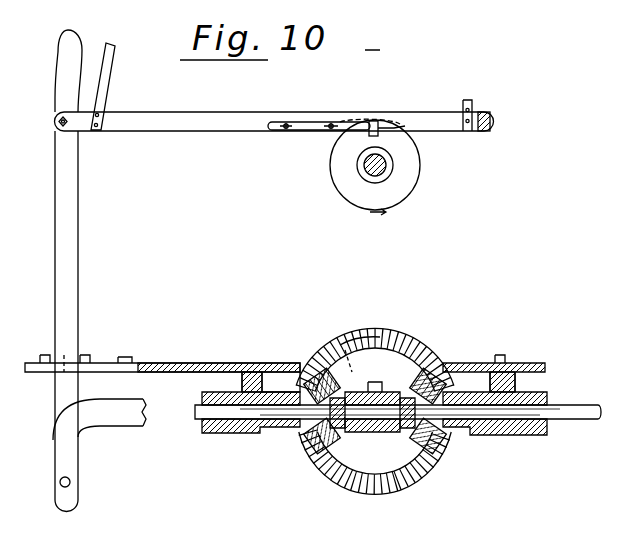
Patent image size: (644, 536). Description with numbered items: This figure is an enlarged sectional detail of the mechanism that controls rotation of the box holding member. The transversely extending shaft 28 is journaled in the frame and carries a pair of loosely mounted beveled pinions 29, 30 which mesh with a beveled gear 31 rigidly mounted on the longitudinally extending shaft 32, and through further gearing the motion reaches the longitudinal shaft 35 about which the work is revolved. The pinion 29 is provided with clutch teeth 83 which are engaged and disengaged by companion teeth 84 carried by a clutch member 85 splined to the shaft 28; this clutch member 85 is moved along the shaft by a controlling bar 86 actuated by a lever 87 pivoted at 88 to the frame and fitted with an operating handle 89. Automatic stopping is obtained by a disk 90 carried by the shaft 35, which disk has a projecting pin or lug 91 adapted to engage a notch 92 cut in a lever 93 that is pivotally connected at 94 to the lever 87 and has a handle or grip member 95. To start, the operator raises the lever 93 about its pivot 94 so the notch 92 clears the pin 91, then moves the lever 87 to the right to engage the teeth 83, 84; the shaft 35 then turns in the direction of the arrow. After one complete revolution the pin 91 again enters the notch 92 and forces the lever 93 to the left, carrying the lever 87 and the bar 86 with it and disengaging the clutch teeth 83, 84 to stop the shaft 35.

The transversely extending shaft 28 is at (580, 404).
The beveled pinion 29 is at (450, 434).
The beveled pinion 30 is at (288, 437).
The beveled gear 31 is at (410, 342).
The longitudinally extending shaft 32 is at (342, 338).
The longitudinal shaft 35 is at (363, 171).
The clutch teeth 83 is at (410, 470).
The companion teeth 84 is at (375, 474).
The clutch member 85 is at (326, 478).
The controlling bar 86 is at (292, 372).
The clutch controlling lever 87 is at (63, 296).
The pivot 88 is at (62, 485).
The operating handle 89 is at (58, 50).
The disk 90 is at (400, 190).
The projecting pin or lug 91 is at (376, 121).
The notch 92 is at (395, 127).
The lever 93 is at (198, 120).
The pivot 94 is at (58, 128).
The handle or grip member 95 is at (109, 73).